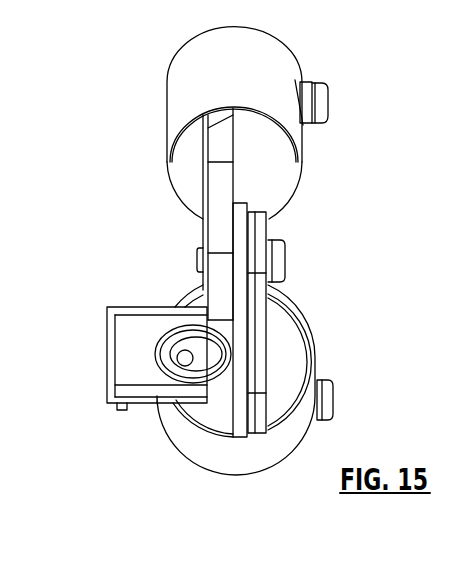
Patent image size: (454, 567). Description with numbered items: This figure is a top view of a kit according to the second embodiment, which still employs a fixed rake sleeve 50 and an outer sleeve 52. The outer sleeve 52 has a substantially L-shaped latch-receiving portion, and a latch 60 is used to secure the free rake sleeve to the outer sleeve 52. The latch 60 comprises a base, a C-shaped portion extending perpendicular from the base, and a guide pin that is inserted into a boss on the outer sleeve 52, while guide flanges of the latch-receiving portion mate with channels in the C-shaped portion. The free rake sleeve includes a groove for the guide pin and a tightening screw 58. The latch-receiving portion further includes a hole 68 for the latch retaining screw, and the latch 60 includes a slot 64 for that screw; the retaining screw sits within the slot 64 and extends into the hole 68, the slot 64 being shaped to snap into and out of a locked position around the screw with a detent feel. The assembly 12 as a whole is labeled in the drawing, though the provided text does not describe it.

The mounting assembly 12 is at (233, 257).
The upper cup housing 50 is at (167, 112).
The lower cup housing 52 is at (315, 350).
The knob 58 is at (328, 402).
The bracket 60 is at (108, 386).
The oval aperture 64 is at (192, 340).
The pin 68 is at (180, 359).